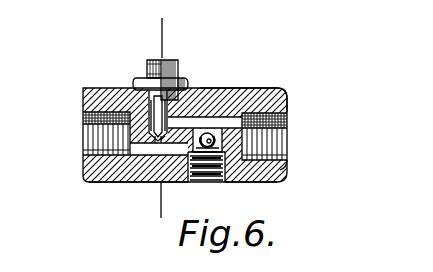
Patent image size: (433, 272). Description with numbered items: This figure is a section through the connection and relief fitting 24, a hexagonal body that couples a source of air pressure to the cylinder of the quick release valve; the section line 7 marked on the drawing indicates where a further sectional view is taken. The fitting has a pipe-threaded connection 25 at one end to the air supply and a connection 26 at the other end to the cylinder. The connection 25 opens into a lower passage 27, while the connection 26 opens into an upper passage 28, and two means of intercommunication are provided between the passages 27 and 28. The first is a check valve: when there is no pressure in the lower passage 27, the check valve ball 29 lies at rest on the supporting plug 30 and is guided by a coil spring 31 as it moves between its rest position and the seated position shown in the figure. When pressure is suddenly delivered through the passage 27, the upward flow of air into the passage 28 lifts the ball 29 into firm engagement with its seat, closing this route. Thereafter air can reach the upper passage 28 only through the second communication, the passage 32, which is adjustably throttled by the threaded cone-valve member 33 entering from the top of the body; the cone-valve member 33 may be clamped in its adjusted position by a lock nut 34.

The section line 7- 7 is at (150, 201).
The connection and relief fitting 24 is at (240, 88).
The pipe-threaded connection 25 is at (83, 126).
The connection to the cylinder 26 is at (289, 127).
The lower passage 27 is at (103, 181).
The upper passage 28 is at (254, 94).
The check valve ball 29 is at (286, 175).
The supporting plug 30 is at (225, 184).
The coil spring 31 is at (190, 180).
The passage 32 is at (152, 138).
The threaded cone-valve member 33 is at (177, 64).
The lock nut 34 is at (144, 78).